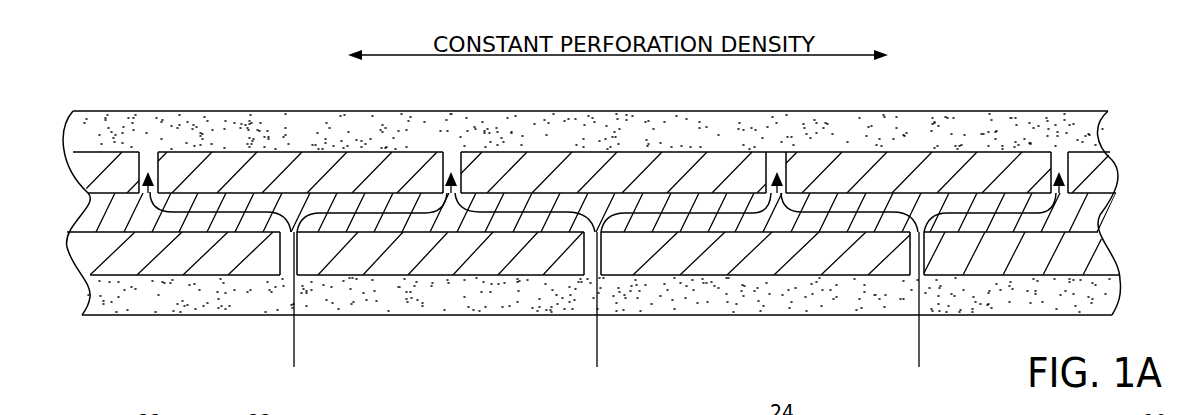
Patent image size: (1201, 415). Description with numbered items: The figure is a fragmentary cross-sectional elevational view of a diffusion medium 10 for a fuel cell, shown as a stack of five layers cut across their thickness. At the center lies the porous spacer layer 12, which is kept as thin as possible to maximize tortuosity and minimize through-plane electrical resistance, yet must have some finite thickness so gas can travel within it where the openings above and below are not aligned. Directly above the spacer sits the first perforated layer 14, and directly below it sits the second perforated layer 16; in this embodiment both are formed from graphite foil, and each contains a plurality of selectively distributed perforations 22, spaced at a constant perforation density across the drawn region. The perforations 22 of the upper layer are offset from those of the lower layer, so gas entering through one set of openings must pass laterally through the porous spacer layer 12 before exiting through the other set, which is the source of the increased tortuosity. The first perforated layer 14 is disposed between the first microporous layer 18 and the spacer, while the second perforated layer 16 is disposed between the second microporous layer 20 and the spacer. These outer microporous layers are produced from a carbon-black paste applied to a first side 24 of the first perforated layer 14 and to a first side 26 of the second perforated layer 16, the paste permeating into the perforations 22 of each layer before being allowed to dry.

The diffusion medium 10 is at (1104, 84).
The porous spacer layer 12 is at (1108, 212).
The first perforated layer 14 is at (1108, 168).
The second perforated layer 16 is at (1095, 255).
The first microporous layer 18 is at (1093, 122).
The second microporous layer 20 is at (1105, 298).
The perforations 22 is at (143, 165).
The first side of the first perforated layer 24 is at (915, 152).
The first side of the second perforated layer 26 is at (880, 275).